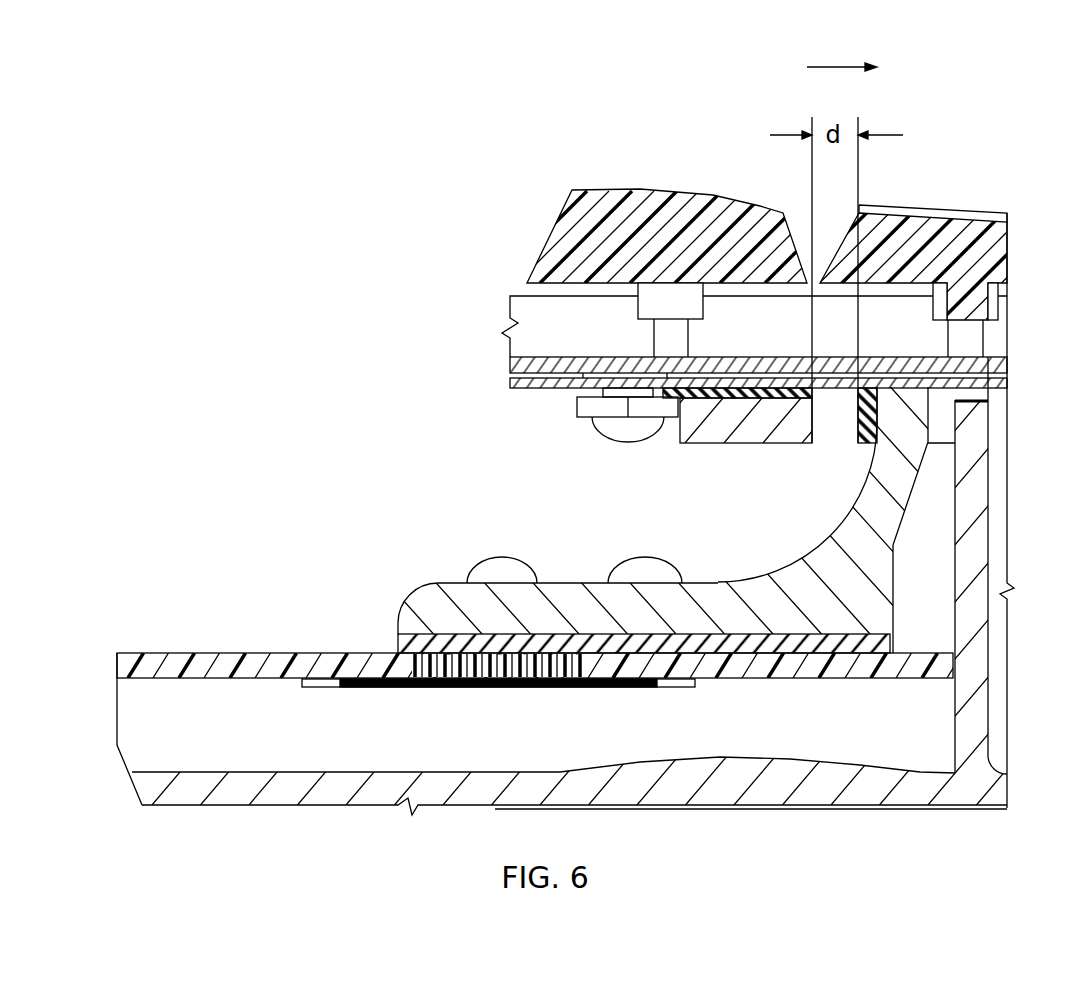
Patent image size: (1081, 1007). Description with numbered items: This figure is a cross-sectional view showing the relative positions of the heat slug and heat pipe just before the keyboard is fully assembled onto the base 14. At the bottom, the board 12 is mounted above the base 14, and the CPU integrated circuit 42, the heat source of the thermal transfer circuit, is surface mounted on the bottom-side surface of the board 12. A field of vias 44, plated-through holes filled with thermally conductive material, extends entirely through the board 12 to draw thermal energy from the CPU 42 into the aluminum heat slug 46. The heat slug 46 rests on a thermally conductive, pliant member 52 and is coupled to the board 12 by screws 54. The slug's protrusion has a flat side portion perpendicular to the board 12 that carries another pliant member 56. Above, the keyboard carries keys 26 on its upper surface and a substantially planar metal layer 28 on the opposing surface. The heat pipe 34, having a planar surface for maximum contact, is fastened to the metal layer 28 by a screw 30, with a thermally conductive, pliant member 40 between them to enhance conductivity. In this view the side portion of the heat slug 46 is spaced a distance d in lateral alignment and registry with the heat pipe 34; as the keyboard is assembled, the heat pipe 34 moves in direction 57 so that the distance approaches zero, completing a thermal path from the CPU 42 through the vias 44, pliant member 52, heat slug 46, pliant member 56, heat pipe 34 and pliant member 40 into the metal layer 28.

The board 12 is at (117, 663).
The base 14 is at (135, 792).
The keys 26 is at (1008, 237).
The metal layer 28 is at (1008, 384).
The screw 30 is at (625, 442).
The heat pipe 34 is at (736, 440).
The pliant member 40 is at (680, 392).
The CPU integrated circuit 42 is at (537, 688).
The field of vias 44 is at (420, 664).
The heat slug 46 is at (783, 574).
The pliant member 52 is at (398, 640).
The screws 54 is at (633, 557).
The pliant member 56 is at (865, 443).
The direction 57 is at (843, 63).